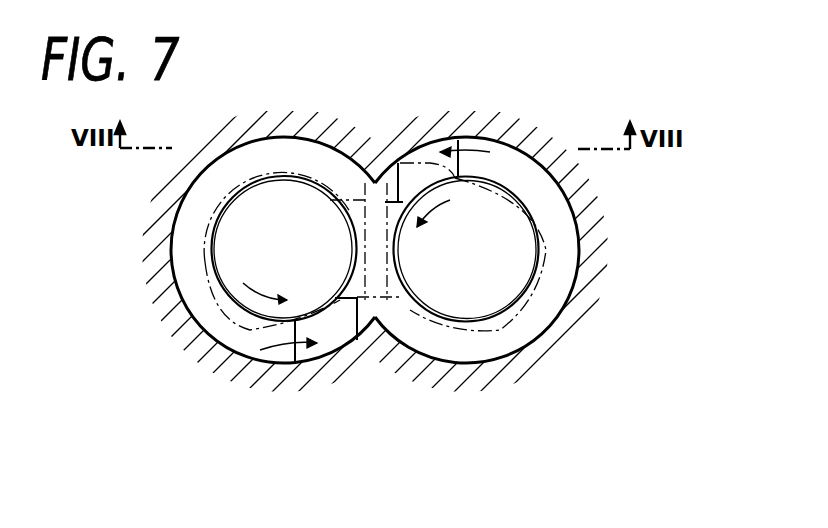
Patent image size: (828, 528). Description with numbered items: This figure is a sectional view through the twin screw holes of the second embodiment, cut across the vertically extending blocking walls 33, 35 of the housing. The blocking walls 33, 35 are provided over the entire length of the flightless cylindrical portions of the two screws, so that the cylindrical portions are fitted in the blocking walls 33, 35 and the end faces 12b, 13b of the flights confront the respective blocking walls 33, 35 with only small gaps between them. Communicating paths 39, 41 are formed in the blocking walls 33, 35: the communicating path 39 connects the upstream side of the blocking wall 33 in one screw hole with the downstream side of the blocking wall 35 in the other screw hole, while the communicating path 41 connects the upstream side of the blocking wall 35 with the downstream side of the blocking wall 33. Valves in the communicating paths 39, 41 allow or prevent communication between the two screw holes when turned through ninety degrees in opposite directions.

The blocking wall 33 is at (560, 228).
The blocking wall 35 is at (190, 220).
The communicating path 39 is at (430, 140).
The communicating path 41 is at (337, 343).
The end face 13b is at (210, 303).
The end face 12b is at (572, 312).